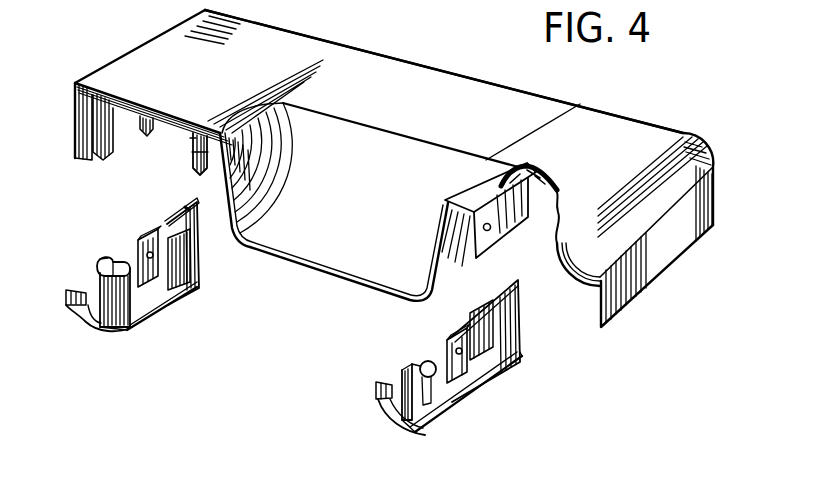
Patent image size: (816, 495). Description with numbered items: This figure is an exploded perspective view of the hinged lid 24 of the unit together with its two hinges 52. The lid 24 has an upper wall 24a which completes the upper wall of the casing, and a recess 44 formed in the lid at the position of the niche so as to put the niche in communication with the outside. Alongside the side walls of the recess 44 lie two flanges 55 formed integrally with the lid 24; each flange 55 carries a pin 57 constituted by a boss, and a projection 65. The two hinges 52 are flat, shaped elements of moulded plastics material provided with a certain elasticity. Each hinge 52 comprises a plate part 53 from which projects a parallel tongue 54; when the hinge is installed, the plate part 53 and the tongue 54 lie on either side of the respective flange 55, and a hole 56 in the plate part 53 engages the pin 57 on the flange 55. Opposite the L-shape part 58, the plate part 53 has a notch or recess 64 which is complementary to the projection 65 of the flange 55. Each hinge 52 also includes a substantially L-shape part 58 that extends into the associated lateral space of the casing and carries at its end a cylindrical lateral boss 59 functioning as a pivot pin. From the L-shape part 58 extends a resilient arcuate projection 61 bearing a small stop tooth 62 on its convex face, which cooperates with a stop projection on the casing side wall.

The hinged lid 24 is at (622, 115).
The upper wall 24a is at (443, 88).
The recess 44 is at (388, 142).
The hinge 52 is at (160, 310).
The plate part 53 is at (177, 222).
The tongue 54 is at (189, 262).
The flange 55 is at (527, 187).
The hole 56 is at (150, 252).
The pin 57 is at (480, 229).
The L-shape part 58 is at (112, 303).
The cylindrical lateral boss 59 is at (126, 260).
The resilient arcuate projection 61 is at (93, 325).
The stop tooth 62 is at (66, 304).
The notch 64 is at (195, 207).
The projection 65 is at (540, 182).